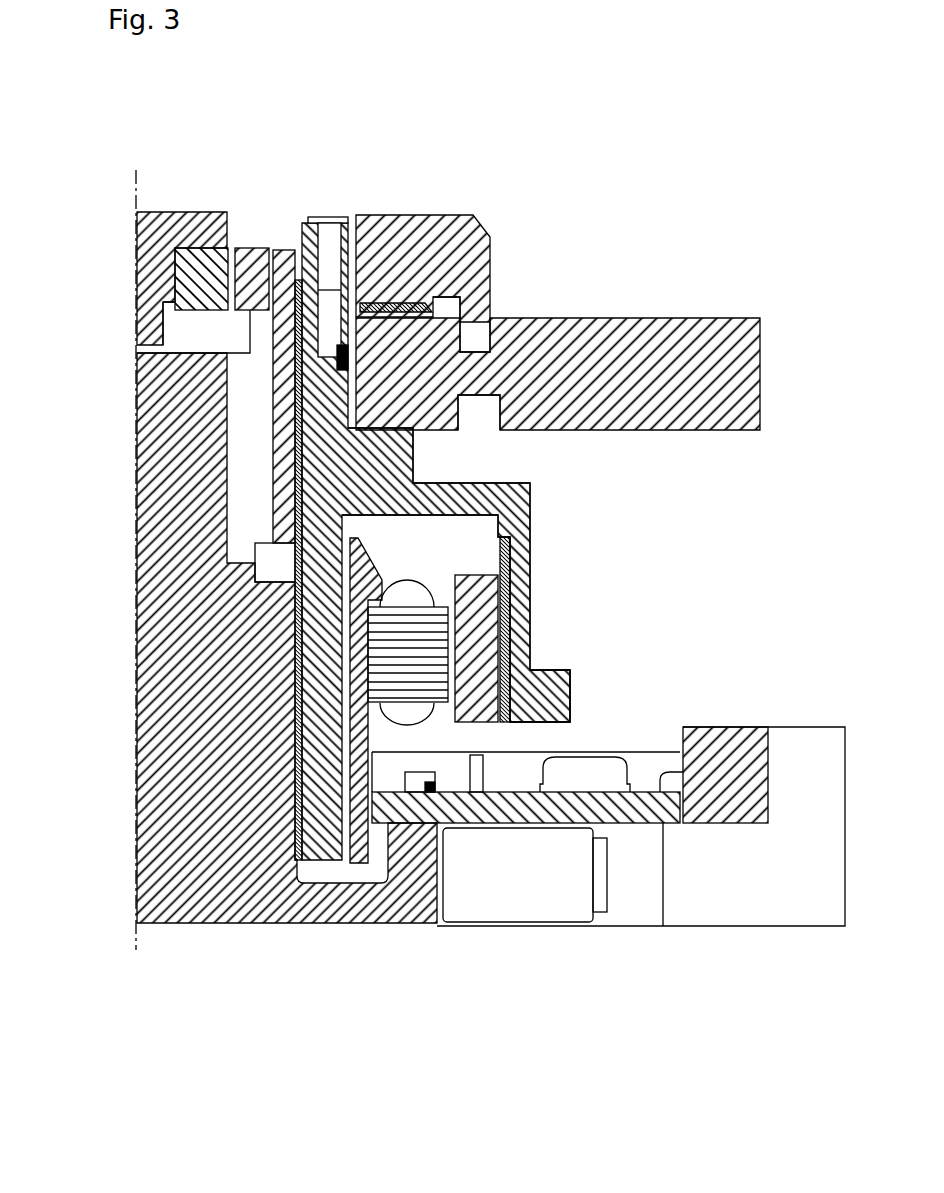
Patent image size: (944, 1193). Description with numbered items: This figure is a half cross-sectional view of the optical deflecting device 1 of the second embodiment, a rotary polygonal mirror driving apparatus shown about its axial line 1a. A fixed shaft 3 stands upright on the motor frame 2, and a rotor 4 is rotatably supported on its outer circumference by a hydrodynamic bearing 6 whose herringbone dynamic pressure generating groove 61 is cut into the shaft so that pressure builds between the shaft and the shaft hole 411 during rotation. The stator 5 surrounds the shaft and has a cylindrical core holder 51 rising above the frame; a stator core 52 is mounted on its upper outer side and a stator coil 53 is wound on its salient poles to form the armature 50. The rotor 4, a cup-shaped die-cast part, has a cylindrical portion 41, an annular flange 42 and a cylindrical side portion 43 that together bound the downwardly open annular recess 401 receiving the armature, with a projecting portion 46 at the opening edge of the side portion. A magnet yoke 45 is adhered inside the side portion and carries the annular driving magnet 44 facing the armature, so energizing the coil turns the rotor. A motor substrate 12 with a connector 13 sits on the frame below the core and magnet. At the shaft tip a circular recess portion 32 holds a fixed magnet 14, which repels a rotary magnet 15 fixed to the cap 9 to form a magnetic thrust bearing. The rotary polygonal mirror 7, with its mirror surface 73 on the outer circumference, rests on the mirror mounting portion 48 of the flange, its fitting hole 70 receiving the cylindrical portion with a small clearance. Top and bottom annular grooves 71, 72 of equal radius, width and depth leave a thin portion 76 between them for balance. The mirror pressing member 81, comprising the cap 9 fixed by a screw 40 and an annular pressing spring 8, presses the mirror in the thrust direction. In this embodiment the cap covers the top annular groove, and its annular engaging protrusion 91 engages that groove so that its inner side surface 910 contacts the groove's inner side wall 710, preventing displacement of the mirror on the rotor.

The optical deflecting device 1 is at (833, 217).
The axial line 1a is at (131, 185).
The motor frame 2 is at (203, 922).
The fixed shaft 3 is at (225, 855).
The circular recess portion 32 is at (175, 335).
The rotor 4 is at (668, 515).
The screw 40 is at (340, 212).
The annular recess 401 is at (300, 688).
The cylindrical portion 41 is at (503, 588).
The shaft hole 411 is at (283, 227).
The annular flange 42 is at (530, 500).
The side portion 43 is at (505, 585).
The driving magnet 44 is at (480, 703).
The magnet yoke 45 is at (570, 683).
The projecting portion 46 is at (548, 672).
The mirror mounting portion 48 is at (403, 460).
The stator 5 is at (398, 733).
The armature 50 is at (655, 990).
The core holder 51 is at (358, 848).
The stator core 52 is at (400, 687).
The stator coil 53 is at (485, 720).
The hydrodynamic bearing 6 is at (270, 417).
The dynamic pressure generating groove 61 is at (292, 672).
The rotary polygonal mirror 7 is at (763, 318).
The fitting hole 70 is at (625, 318).
The top annular groove 71 is at (478, 335).
The inner side wall 710 is at (463, 350).
The bottom annular groove 72 is at (485, 410).
The mirror surface 73 is at (760, 352).
The portion between the top and bottom annular grooves 76 is at (497, 385).
The annular pressing spring 8 is at (488, 250).
The mirror pressing member 81 is at (580, 142).
The cap 9 is at (473, 217).
The engaging protrusion 91 is at (490, 317).
The inner side surface 910 is at (450, 308).
The motor substrate 12 is at (700, 827).
The connector 13 is at (578, 893).
The fixed magnet 14 is at (237, 223).
The rotary magnet 15 is at (187, 223).